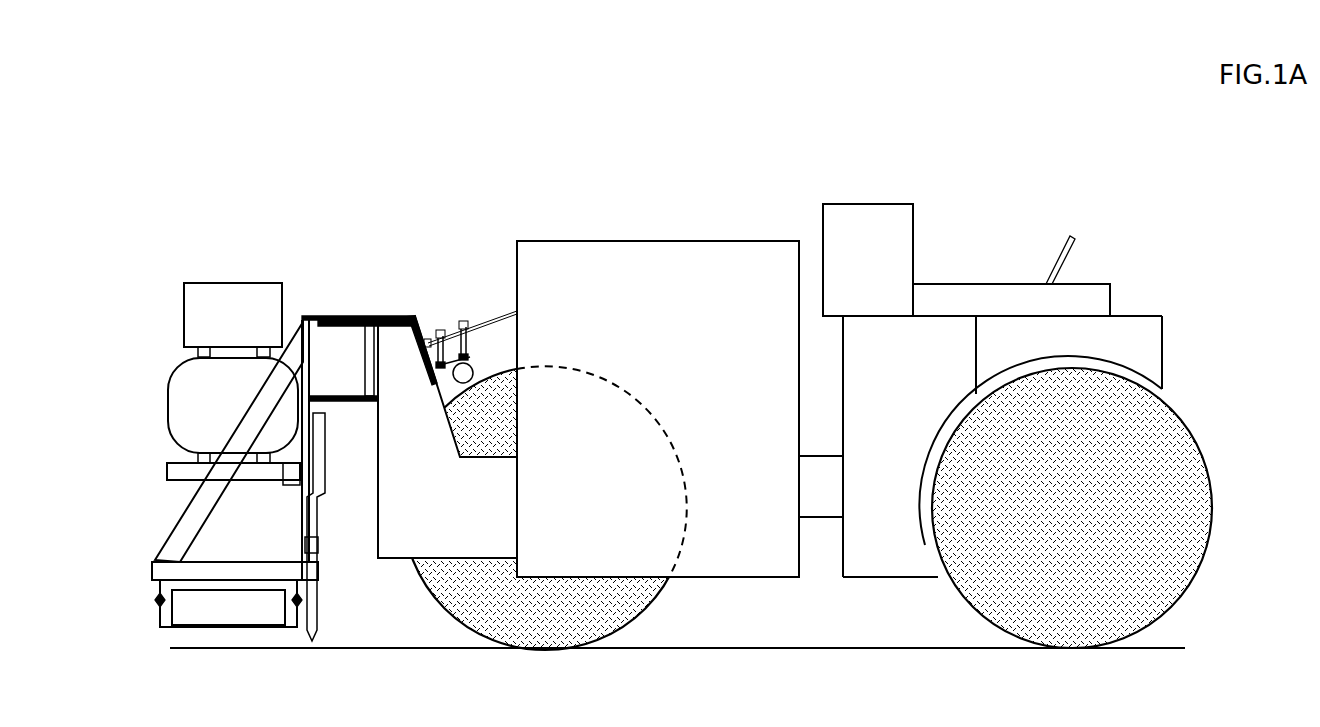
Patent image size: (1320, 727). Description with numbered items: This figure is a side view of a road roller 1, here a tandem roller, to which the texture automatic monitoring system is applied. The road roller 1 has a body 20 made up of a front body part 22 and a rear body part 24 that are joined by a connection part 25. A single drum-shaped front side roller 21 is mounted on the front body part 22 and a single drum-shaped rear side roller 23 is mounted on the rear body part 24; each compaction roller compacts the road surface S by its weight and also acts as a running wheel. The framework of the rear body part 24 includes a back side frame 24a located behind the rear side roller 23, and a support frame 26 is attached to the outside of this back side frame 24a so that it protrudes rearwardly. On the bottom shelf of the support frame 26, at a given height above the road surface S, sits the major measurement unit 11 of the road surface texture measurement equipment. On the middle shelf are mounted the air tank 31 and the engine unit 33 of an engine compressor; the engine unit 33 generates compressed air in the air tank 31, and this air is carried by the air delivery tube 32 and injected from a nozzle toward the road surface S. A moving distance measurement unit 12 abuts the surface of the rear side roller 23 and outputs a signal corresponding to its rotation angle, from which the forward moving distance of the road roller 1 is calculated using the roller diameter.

The road roller 1 is at (815, 337).
The major measurement unit 11 is at (185, 602).
The moving distance measurement unit 12 is at (488, 345).
The body 20 is at (839, 388).
The front side roller 21 is at (977, 607).
The front body part 22 is at (945, 335).
The rear side roller 23 is at (620, 605).
The rear body part 24 is at (598, 240).
The back side frame 24a is at (372, 450).
The connection part 25 is at (820, 505).
The support frame 26 is at (195, 517).
The air tank 31 is at (205, 412).
The air delivery tube 32 is at (313, 593).
The engine unit 33 is at (218, 327).
The road surface S is at (428, 648).